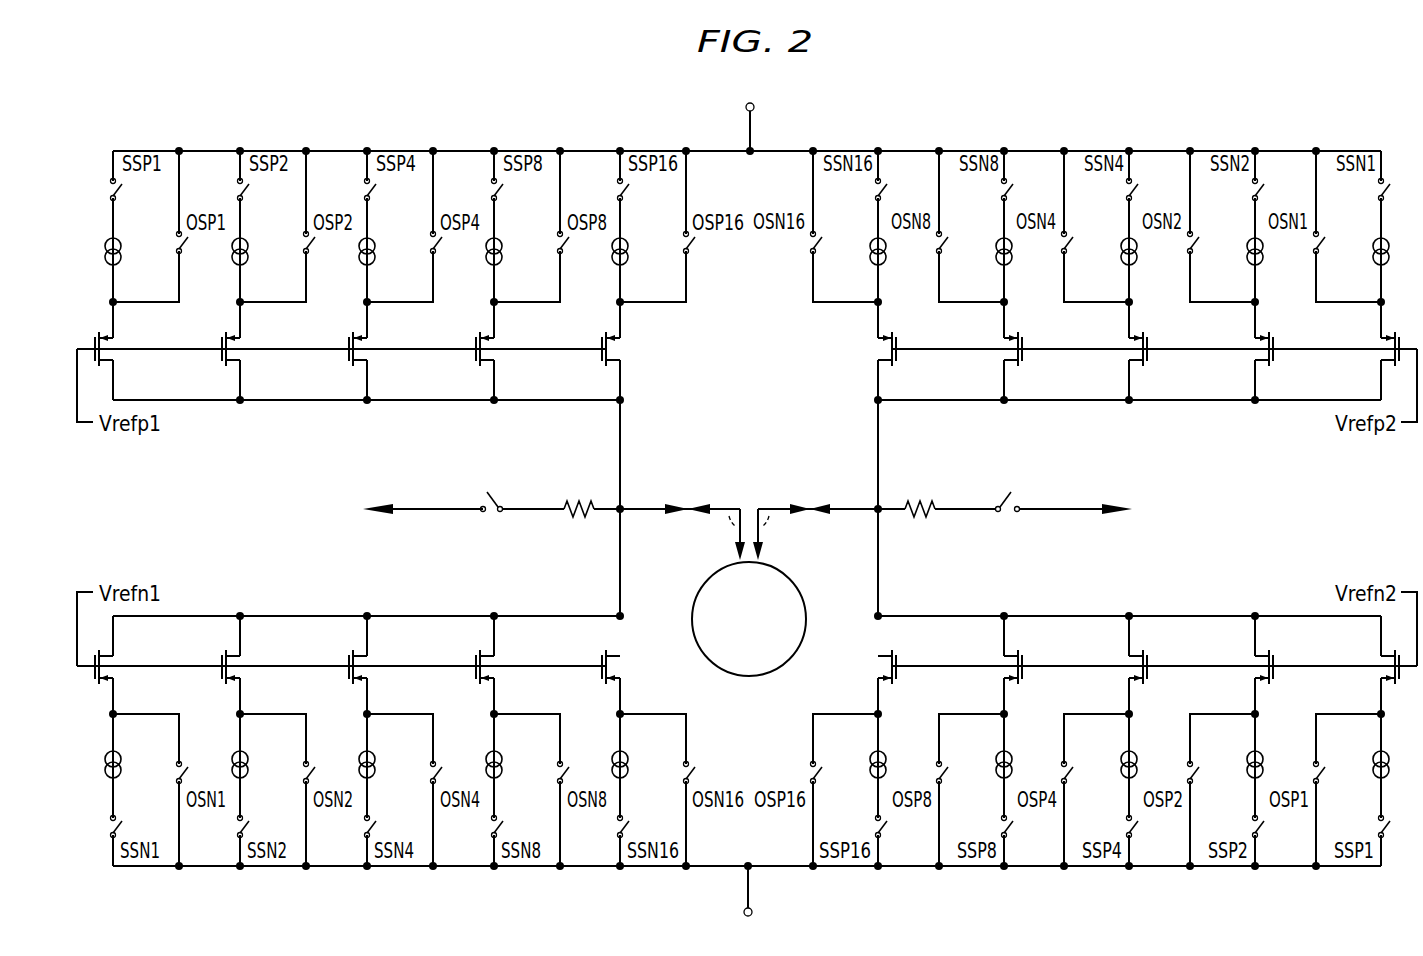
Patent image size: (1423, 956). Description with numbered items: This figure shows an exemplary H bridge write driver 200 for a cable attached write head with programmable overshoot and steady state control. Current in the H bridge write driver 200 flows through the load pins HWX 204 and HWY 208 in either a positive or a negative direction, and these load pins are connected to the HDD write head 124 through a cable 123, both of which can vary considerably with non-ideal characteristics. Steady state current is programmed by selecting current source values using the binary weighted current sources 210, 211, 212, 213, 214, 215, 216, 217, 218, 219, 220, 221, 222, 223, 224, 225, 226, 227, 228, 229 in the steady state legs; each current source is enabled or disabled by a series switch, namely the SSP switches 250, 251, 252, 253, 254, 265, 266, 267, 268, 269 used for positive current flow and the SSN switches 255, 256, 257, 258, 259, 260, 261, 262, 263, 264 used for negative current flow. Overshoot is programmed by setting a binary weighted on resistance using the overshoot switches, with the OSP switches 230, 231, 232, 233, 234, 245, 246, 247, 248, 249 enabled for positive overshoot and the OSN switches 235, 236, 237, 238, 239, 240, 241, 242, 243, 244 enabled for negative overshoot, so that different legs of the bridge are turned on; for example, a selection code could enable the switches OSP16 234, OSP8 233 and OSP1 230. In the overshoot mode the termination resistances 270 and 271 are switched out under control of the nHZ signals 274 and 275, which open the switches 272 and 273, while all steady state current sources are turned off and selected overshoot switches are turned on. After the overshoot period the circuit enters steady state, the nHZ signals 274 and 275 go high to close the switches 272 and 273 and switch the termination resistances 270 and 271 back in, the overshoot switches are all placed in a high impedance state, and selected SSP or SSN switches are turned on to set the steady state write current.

The H bridge write driver 200 is at (1120, 125).
The cable 123 is at (748, 516).
The write head 124 is at (794, 662).
The load pin HWX 204 is at (688, 505).
The load pin HWY 208 is at (806, 505).
The current source 210 is at (138, 261).
The current source 211 is at (265, 261).
The current source 212 is at (392, 261).
The current source 213 is at (519, 261).
The current source 214 is at (645, 261).
The current source 215 is at (855, 262).
The current source 216 is at (981, 262).
The current source 217 is at (1106, 262).
The current source 218 is at (1232, 262).
The current source 219 is at (1358, 262).
The current source 220 is at (138, 754).
The current source 221 is at (265, 754).
The current source 222 is at (392, 754).
The current source 223 is at (519, 754).
The current source 224 is at (645, 754).
The current source 225 is at (855, 756).
The current source 226 is at (981, 756).
The current source 227 is at (1106, 756).
The current source 228 is at (1232, 756).
The current source 229 is at (1358, 756).
The OSP switch 230 is at (206, 259).
The OSP switch 231 is at (333, 259).
The OSP switch 232 is at (460, 259).
The OSP switch 233 is at (587, 259).
The OSP switch 234 is at (713, 259).
The OSN switch 235 is at (792, 260).
The OSN switch 236 is at (918, 260).
The OSN switch 237 is at (1043, 260).
The OSN switch 238 is at (1169, 260).
The OSN switch 239 is at (1295, 260).
The OSN switch 240 is at (205, 757).
The OSN switch 241 is at (332, 757).
The OSN switch 242 is at (459, 757).
The OSN switch 243 is at (586, 757).
The OSN switch 244 is at (712, 757).
The OSP switch 245 is at (791, 759).
The OSP switch 246 is at (917, 759).
The OSP switch 247 is at (1042, 759).
The OSP switch 248 is at (1168, 759).
The OSP switch 249 is at (1294, 759).
The SSP switch 250 is at (141, 201).
The SSP switch 251 is at (268, 201).
The SSP switch 252 is at (395, 201).
The SSP switch 253 is at (522, 201).
The SSP switch 254 is at (648, 201).
The SSN switch 255 is at (857, 204).
The SSN switch 256 is at (983, 204).
The SSN switch 257 is at (1108, 204).
The SSN switch 258 is at (1234, 204).
The SSN switch 259 is at (1360, 204).
The SSN switch 260 is at (141, 813).
The SSN switch 261 is at (268, 813).
The SSN switch 262 is at (395, 813).
The SSN switch 263 is at (522, 813).
The SSN switch 264 is at (648, 813).
The SSP switch 265 is at (856, 815).
The SSP switch 266 is at (982, 815).
The SSP switch 267 is at (1107, 815).
The SSP switch 268 is at (1233, 815).
The SSP switch 269 is at (1359, 815).
The termination resistance 270 is at (578, 499).
The termination resistance 271 is at (919, 500).
The switch 272 is at (489, 512).
The switch 273 is at (1010, 512).
The nHZ signal 274 is at (438, 491).
The nHZ signal 275 is at (1063, 492).